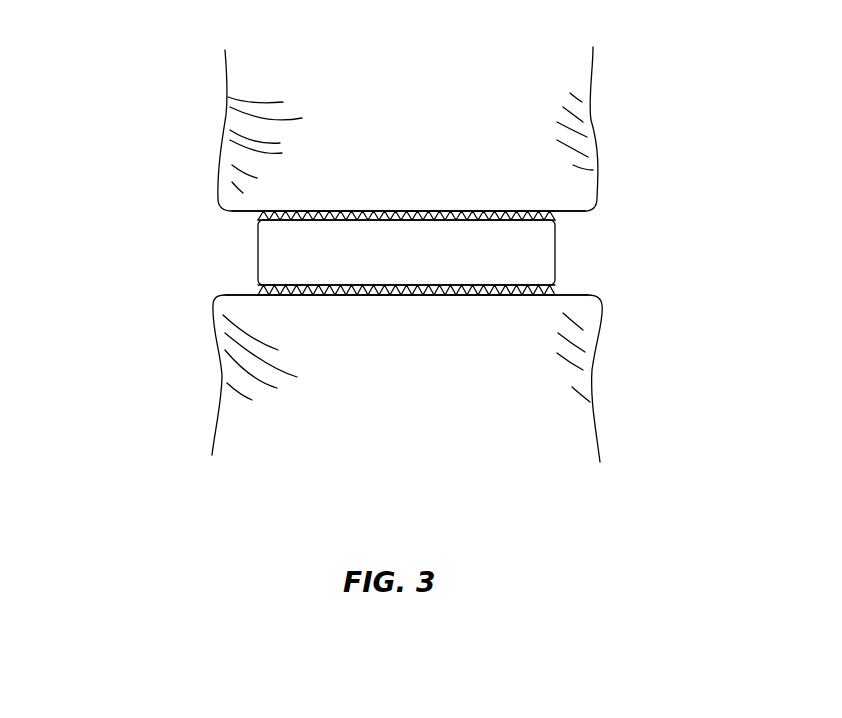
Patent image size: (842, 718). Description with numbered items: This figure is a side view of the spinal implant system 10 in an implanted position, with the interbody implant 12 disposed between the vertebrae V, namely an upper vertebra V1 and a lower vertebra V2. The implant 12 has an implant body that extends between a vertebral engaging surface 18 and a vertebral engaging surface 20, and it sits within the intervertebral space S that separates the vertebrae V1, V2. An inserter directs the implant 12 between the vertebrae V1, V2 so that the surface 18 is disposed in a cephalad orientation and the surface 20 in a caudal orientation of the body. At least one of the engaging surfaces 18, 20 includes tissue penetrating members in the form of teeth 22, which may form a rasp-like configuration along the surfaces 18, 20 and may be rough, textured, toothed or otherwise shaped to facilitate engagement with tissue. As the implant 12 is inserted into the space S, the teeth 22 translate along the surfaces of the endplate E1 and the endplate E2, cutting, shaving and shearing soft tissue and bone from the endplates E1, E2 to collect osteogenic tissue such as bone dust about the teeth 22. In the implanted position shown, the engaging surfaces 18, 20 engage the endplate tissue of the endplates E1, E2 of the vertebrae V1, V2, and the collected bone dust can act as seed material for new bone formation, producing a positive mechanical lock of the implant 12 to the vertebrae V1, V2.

The spinal implant system 10 is at (736, 133).
The interbody implant 12 is at (257, 249).
The vertebral engaging surface 18 is at (447, 211).
The vertebral engaging surface 20 is at (462, 296).
The tooth 22 is at (383, 211).
The vertebrae V is at (148, 123).
The vertebra V1 is at (250, 85).
The vertebra V2 is at (245, 333).
The intervertebral space S is at (165, 287).
The endplate E1 is at (330, 212).
The endplate E2 is at (327, 296).